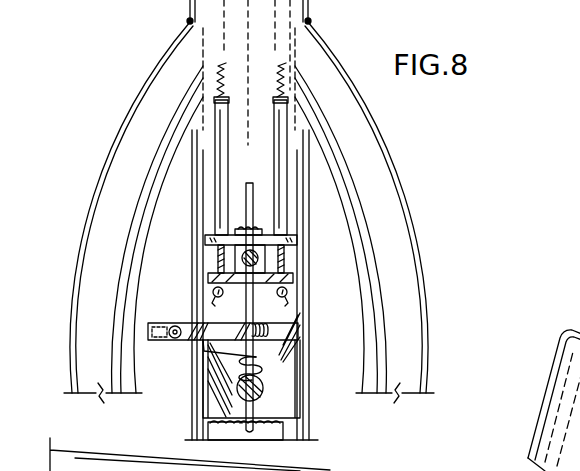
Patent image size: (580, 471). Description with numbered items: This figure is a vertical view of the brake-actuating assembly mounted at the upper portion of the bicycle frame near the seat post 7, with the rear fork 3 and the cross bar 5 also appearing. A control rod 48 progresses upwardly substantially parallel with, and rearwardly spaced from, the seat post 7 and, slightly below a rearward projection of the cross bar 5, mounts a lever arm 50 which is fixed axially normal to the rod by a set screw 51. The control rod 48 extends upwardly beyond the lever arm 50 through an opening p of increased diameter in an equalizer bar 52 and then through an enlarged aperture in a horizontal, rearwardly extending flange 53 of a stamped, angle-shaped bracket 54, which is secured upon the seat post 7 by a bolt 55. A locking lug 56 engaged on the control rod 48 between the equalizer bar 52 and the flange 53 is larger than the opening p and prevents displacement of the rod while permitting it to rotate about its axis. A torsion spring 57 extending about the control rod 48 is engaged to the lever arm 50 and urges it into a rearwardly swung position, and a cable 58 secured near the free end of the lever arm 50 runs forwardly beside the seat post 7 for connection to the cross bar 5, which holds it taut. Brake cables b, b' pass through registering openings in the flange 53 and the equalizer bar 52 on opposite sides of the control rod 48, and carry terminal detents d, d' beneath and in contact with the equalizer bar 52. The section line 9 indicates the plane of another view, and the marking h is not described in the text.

The rear fork 3 is at (137, 125).
The seat post 7 is at (193, 183).
The brake cable b is at (153, 148).
The brake cable b' is at (367, 149).
The nut h is at (258, 232).
The flange 53 is at (263, 240).
The locking lug 56 is at (270, 246).
The opening p is at (292, 243).
The equalizer bar 52 is at (296, 274).
The terminal detent d is at (128, 275).
The terminal detent d' is at (368, 272).
The section line 9- 9 is at (180, 312).
The lever arm 50 is at (262, 341).
The cable 58 is at (173, 338).
The set screw 51 is at (266, 329).
The control rod 48 is at (293, 413).
The torsion spring 57 is at (203, 352).
The bracket 54 is at (258, 356).
The bolt 55 is at (237, 392).
The cross bar 5 is at (456, 470).